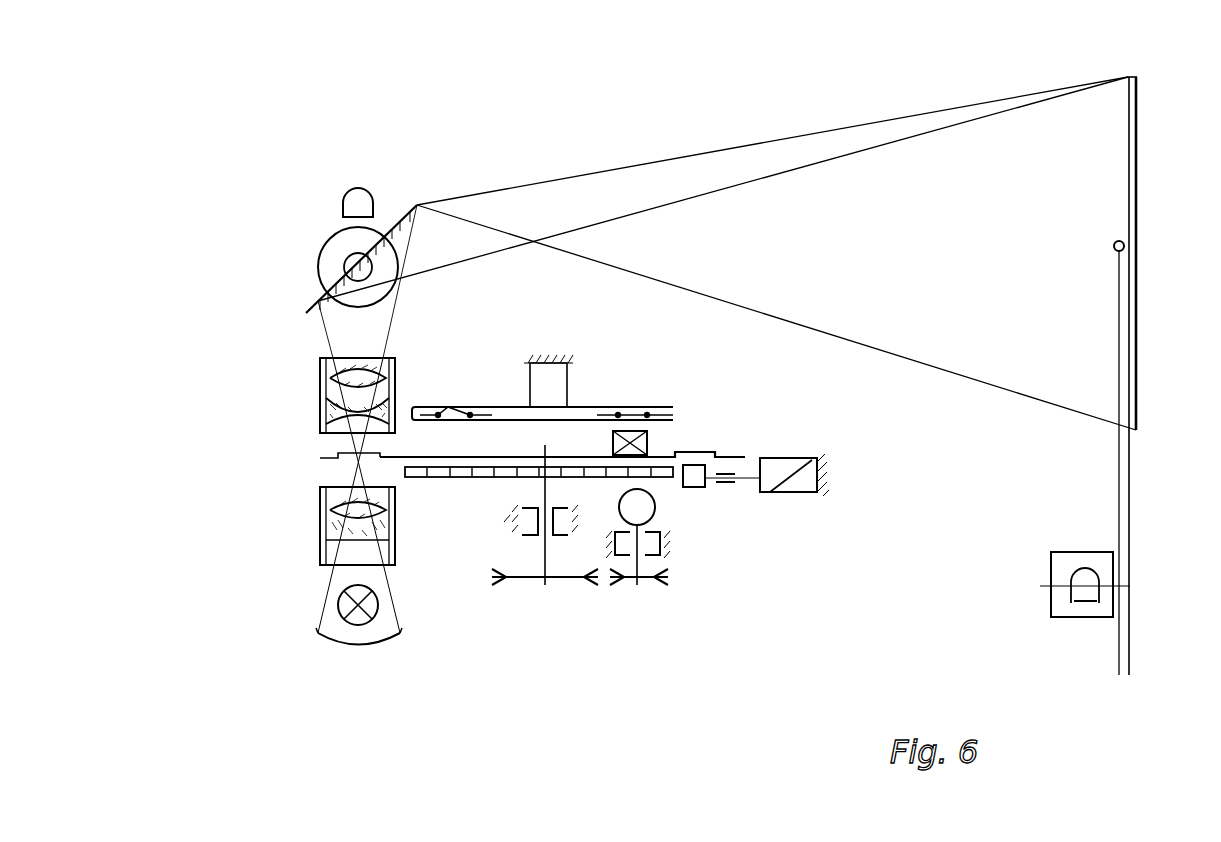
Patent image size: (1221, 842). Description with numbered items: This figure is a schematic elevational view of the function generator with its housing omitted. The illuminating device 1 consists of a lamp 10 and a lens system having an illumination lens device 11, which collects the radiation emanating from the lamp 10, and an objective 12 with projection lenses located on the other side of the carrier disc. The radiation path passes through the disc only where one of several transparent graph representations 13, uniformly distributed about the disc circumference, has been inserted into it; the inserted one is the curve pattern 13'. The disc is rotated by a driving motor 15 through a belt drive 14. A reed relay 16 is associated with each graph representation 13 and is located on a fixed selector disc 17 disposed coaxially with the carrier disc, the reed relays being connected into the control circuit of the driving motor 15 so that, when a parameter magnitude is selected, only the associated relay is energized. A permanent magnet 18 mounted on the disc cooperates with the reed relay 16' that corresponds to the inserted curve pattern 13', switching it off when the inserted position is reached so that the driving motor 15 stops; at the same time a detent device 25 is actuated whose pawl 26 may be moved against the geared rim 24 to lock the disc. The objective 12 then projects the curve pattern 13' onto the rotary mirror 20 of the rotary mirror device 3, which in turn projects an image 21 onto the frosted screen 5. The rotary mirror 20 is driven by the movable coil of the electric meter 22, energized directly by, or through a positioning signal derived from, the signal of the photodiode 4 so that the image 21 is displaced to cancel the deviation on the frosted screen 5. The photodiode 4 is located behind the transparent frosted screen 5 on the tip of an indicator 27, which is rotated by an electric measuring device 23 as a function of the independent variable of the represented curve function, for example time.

The illuminating device 1 is at (315, 648).
The rotary mirror device 3 is at (280, 232).
The photodiode 4 is at (1123, 244).
The frosted screen 5 is at (1132, 160).
The lamp 10 is at (338, 604).
The illumination lens device 11 is at (320, 520).
The objective 12 is at (320, 378).
The graph representation 13 is at (577, 433).
The curve pattern 13' is at (251, 436).
The belt drive 14 is at (608, 585).
The driving motor 15 is at (655, 510).
The reed relay 16 is at (456, 362).
The reed relay 16' is at (647, 360).
The selector disc 17 is at (582, 413).
The permanent magnet 18 is at (650, 443).
The rotary mirror 20 is at (419, 203).
The image 21 is at (1128, 77).
The electric meter 22 is at (360, 187).
The electric measuring device 23 is at (1100, 618).
The scale 24 is at (458, 477).
The detent device 25 is at (803, 490).
The pawl 26 is at (700, 488).
The indicator 27 is at (1122, 375).